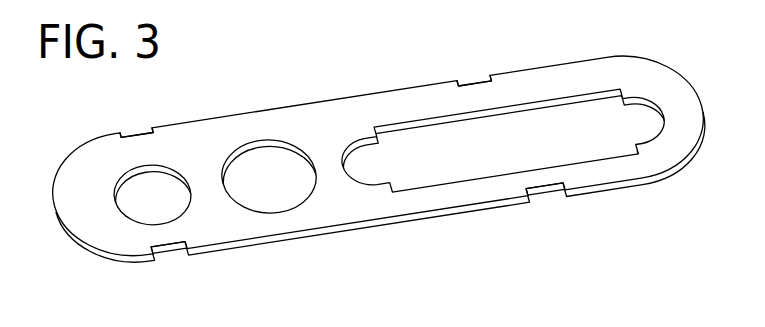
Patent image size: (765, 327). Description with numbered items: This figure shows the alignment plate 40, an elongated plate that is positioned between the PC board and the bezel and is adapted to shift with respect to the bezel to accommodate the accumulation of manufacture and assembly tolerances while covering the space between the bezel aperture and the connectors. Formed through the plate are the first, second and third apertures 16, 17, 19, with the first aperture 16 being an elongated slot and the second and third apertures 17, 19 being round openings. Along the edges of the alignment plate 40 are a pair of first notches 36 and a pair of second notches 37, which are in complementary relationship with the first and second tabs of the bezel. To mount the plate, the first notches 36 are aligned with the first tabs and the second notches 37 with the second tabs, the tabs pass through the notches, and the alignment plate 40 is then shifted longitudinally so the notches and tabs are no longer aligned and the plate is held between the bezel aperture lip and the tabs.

The alignment plate 40 is at (682, 103).
The first aperture 16 is at (420, 122).
The second aperture 17 is at (258, 142).
The third aperture 19 is at (136, 165).
The first notches 36 is at (137, 134).
The second notches 37 is at (172, 258).